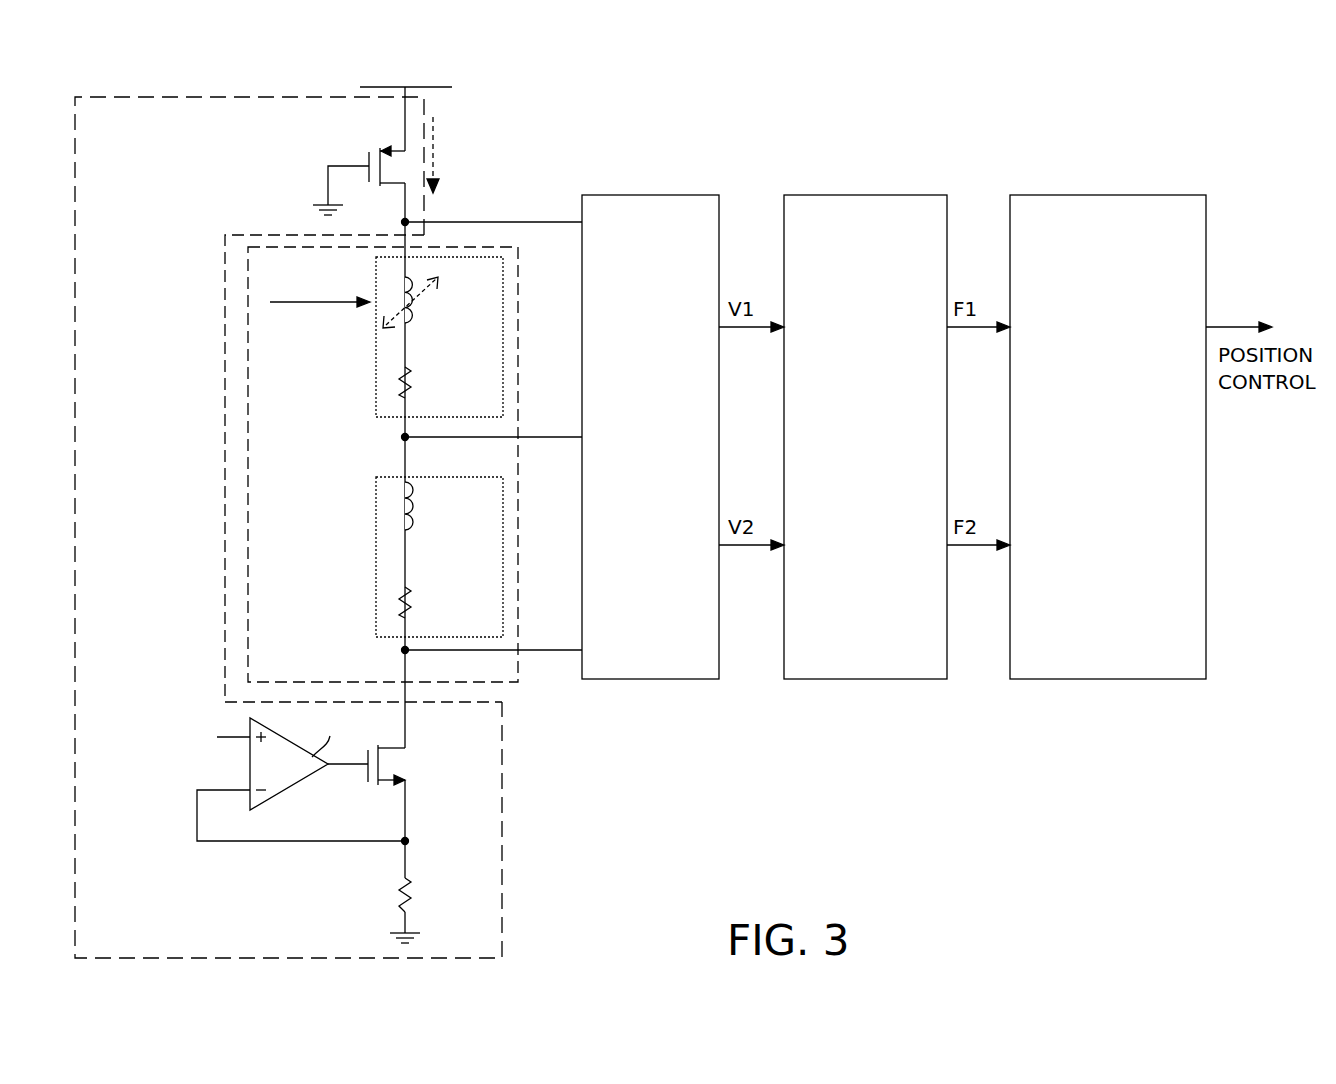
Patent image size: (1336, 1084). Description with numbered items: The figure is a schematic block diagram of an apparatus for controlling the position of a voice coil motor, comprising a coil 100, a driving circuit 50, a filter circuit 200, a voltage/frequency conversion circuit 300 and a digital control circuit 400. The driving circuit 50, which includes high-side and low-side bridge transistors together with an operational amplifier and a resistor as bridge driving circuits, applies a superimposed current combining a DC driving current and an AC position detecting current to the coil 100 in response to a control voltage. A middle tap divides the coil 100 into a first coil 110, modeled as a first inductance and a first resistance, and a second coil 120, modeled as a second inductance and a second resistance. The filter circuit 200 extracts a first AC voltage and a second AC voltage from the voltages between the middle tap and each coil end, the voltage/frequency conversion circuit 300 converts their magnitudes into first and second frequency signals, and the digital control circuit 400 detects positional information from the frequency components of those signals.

The driving circuit 50 is at (143, 97).
The coil 100 is at (518, 675).
The first coil 110 is at (376, 368).
The second coil 120 is at (376, 593).
The filter circuit 200 is at (656, 679).
The voltage/frequency conversion circuit 300 is at (838, 679).
The digital control circuit 400 is at (1095, 679).